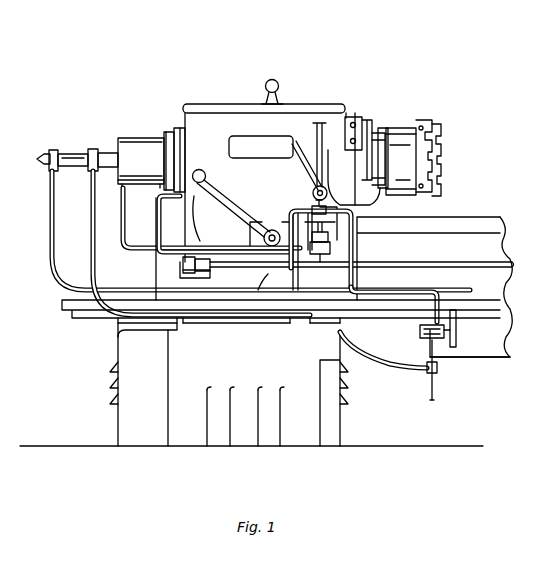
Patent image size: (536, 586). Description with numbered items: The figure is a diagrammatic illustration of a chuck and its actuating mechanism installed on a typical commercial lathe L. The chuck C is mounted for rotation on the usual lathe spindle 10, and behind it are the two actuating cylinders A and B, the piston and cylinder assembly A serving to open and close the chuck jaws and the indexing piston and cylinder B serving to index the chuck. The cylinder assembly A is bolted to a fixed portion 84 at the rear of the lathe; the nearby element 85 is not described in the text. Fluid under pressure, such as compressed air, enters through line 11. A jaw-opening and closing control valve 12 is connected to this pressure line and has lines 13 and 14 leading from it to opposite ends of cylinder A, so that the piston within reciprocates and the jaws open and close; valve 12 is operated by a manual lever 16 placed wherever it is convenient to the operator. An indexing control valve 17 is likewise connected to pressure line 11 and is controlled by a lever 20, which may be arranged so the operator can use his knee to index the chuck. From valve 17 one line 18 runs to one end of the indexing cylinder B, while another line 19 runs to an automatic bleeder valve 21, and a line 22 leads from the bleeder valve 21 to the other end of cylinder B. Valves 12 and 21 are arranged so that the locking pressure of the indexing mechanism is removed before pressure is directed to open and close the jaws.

The lathe L is at (313, 104).
The lathe spindle 10 is at (378, 130).
The chuck C is at (404, 119).
The actuating cylinder A is at (135, 137).
The flange 85 is at (158, 133).
The fixed portion 84 is at (178, 131).
The indexing piston and cylinder B is at (70, 146).
The line 22 is at (56, 287).
The line 14 is at (124, 249).
The line 13 is at (214, 268).
The jaw-opening and closing control valve 12 is at (322, 268).
The manual lever 16 is at (354, 247).
The automatic bleeder valve 21 is at (305, 201).
The line 19 is at (404, 291).
The line 18 is at (236, 318).
The line 11 is at (436, 395).
The indexing control valve 17 is at (405, 333).
The lever 20 is at (468, 336).